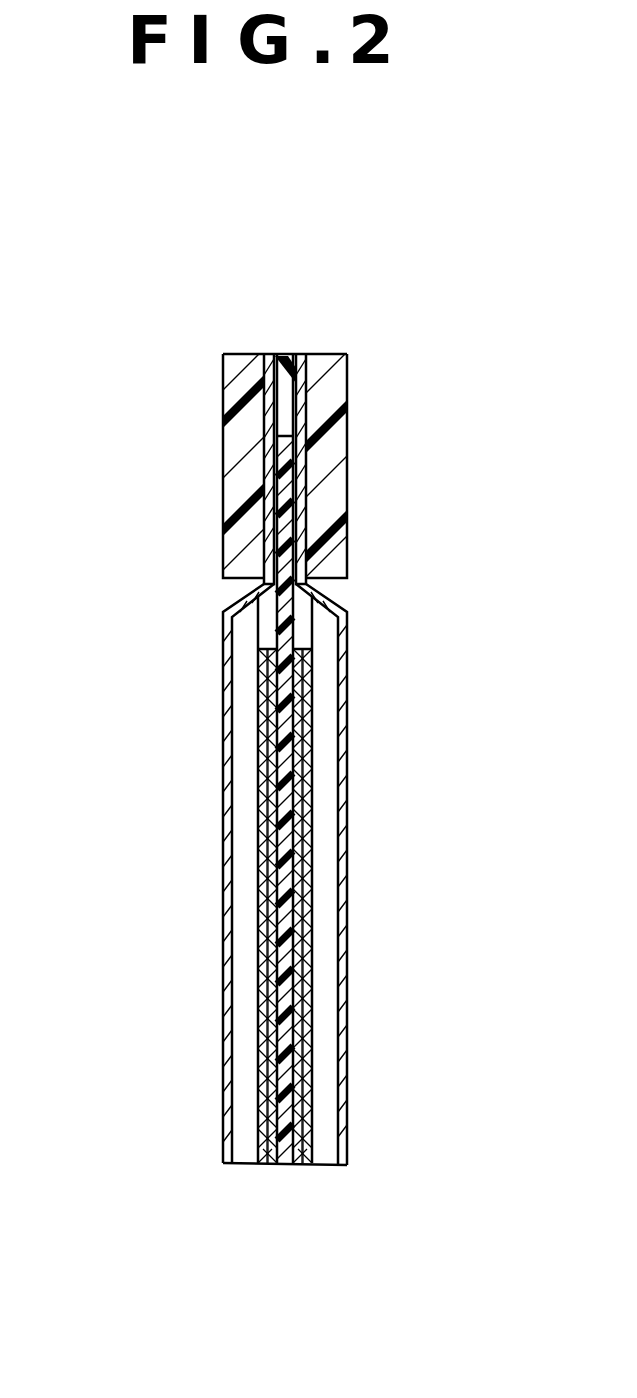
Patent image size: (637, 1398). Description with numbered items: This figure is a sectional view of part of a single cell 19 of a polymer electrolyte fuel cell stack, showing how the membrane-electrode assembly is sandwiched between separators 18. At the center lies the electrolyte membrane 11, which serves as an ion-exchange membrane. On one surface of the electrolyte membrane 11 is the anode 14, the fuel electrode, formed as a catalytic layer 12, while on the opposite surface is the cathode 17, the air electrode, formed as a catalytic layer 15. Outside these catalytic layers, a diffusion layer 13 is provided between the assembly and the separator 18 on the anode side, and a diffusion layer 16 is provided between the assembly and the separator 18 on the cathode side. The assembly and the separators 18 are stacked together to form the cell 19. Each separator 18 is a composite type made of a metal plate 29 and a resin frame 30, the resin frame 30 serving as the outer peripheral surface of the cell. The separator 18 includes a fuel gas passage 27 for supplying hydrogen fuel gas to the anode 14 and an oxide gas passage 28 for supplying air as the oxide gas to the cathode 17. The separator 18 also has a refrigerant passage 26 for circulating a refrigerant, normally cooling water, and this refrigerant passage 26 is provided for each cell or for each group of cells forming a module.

The electrolyte membrane 11 is at (282, 1163).
The catalytic layer 12 is at (267, 1160).
The diffusion layer 13 is at (260, 1126).
The anode 14 is at (182, 994).
The catalytic layer 15 is at (303, 1160).
The diffusion layer 16 is at (310, 1127).
The cathode 17 is at (383, 994).
The separator 18 is at (281, 400).
The cell 19 is at (370, 671).
The refrigerant passage 26 is at (242, 584).
The fuel gas passage 27 is at (247, 725).
The oxide gas passage 28 is at (322, 727).
The metal plate 29 is at (281, 433).
The resin frame 30 is at (237, 387).